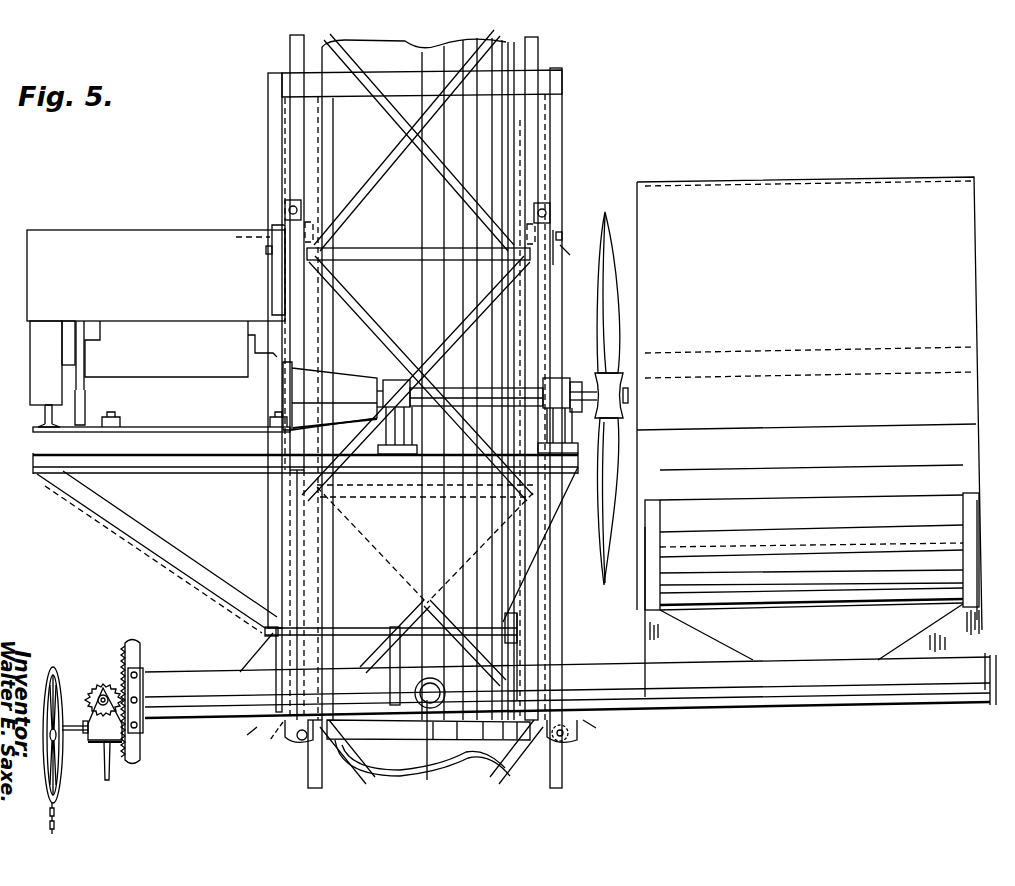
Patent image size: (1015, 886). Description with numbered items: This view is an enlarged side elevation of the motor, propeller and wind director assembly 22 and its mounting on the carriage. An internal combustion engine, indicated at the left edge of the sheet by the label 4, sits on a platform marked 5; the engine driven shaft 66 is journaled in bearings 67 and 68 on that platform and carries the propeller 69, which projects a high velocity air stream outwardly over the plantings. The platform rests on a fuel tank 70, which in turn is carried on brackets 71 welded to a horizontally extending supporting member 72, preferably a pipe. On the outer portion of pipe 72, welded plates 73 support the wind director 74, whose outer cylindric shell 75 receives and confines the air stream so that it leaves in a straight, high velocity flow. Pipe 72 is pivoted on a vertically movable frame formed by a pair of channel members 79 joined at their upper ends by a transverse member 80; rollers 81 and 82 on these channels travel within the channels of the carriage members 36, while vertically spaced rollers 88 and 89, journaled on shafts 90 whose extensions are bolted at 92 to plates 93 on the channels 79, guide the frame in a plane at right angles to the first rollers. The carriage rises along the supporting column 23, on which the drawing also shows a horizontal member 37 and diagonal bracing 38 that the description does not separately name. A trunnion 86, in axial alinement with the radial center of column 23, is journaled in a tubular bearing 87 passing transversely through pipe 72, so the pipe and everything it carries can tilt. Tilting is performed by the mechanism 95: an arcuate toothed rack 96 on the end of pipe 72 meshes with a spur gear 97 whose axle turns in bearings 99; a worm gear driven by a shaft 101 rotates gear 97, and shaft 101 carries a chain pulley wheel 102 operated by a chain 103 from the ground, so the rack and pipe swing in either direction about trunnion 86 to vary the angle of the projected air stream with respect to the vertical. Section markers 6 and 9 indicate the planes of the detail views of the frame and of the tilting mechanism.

The motor 4 is at (105, 328).
The base plate 5 is at (75, 463).
The section line 6 is at (233, 676).
The section line 9 is at (70, 643).
The motor, propeller and wind director assembly 22 is at (634, 161).
The supporting column 23 is at (510, 113).
The carriage members 36 is at (290, 48).
The cross beam 37 is at (388, 252).
The diagonal brace 38 is at (400, 118).
The engine driven shaft 66 is at (520, 400).
The bearing 67 is at (392, 380).
The bearing 68 is at (560, 380).
The propeller 69 is at (600, 287).
The tank 70 is at (307, 569).
The brackets 71 is at (268, 640).
The horizontally extending supporting member 72 is at (668, 705).
The welded plates 73 is at (690, 615).
The wind director 74 is at (797, 170).
The outer cylindric shell 75 is at (832, 190).
The channel members 79 is at (268, 160).
The transverse member 80 is at (520, 78).
The roller 81 is at (287, 203).
The roller 82 is at (300, 746).
The trunnion 86 is at (438, 745).
The tubular bearing 87 is at (431, 690).
The rollers 88 is at (307, 230).
The rollers 89 is at (432, 737).
The shafts 90 is at (293, 245).
The bolts 92 is at (265, 250).
The plates 93 is at (405, 243).
The tilting mechanism 95 is at (155, 766).
The arcuate toothed rack 96 is at (138, 665).
The spur gear 97 is at (104, 684).
The bearings 99 is at (108, 688).
The shaft 101 is at (77, 738).
The chain pulley wheel 102 is at (61, 690).
The chain 103 is at (60, 808).